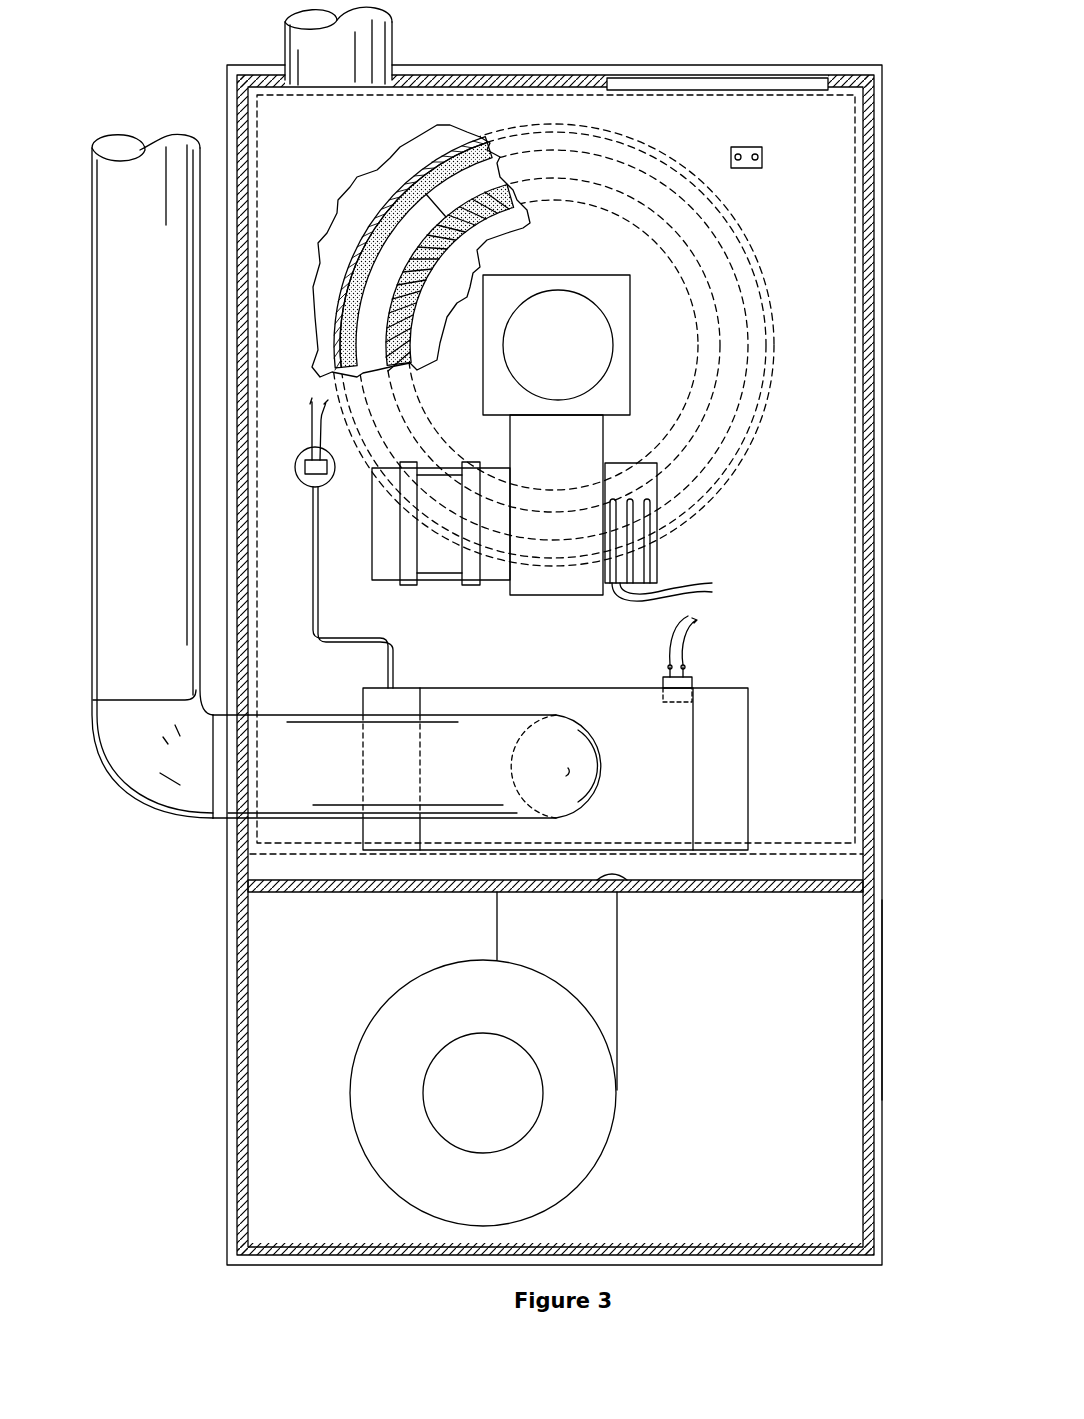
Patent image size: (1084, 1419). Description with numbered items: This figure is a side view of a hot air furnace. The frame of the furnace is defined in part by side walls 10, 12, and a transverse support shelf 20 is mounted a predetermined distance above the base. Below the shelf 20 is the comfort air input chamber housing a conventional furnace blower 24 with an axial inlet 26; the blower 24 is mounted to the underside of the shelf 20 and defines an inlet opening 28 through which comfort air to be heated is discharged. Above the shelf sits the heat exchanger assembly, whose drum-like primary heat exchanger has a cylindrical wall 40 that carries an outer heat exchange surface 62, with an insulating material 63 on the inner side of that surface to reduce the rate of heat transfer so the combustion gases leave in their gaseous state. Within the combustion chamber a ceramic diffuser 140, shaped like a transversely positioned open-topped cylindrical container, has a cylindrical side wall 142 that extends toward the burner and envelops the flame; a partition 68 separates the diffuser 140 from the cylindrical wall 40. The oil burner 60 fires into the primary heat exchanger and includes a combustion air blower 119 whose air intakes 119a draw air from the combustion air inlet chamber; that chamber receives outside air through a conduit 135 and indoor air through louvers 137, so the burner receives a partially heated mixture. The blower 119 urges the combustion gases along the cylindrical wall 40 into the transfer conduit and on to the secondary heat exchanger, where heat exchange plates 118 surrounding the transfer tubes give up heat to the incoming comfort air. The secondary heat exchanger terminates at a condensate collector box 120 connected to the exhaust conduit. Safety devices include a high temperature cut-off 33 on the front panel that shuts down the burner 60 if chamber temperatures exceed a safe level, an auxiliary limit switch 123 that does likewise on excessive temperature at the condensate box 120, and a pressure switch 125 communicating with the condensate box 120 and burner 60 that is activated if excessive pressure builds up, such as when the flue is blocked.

The side wall 10 is at (227, 996).
The side wall 12 is at (882, 1008).
The transverse support shelf 20 is at (352, 893).
The furnace blower 24 is at (577, 1136).
The axial inlet 26 is at (537, 1073).
The inlet opening 28 is at (620, 883).
The high temperature cut-off 33 is at (750, 168).
The cylindrical wall 40 is at (490, 166).
The burner 60 is at (545, 357).
The outer heat exchange surface 62 is at (373, 172).
The insulating material 63 is at (376, 200).
The partition 68 is at (428, 162).
The heat exchange plates 118 is at (102, 182).
The blower 119 is at (556, 592).
The air intakes 119a is at (686, 532).
The condensate collector box 120 is at (733, 768).
The auxiliary limit switch 123 is at (688, 686).
The pressure switch 125 is at (333, 470).
The conduit 135 is at (360, 42).
The louvers 137 is at (760, 82).
The diffuser 140 is at (410, 252).
The cylindrical side wall 142 is at (415, 306).